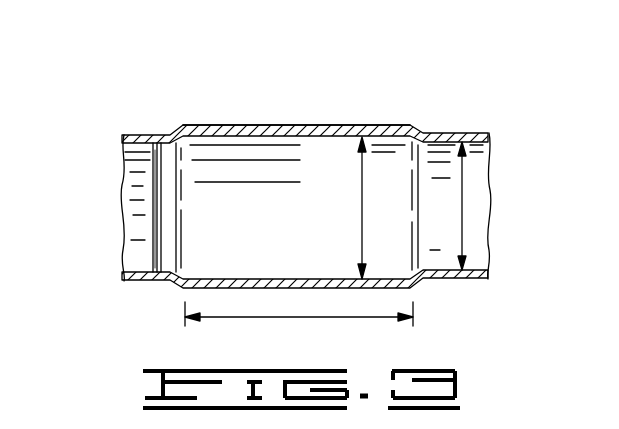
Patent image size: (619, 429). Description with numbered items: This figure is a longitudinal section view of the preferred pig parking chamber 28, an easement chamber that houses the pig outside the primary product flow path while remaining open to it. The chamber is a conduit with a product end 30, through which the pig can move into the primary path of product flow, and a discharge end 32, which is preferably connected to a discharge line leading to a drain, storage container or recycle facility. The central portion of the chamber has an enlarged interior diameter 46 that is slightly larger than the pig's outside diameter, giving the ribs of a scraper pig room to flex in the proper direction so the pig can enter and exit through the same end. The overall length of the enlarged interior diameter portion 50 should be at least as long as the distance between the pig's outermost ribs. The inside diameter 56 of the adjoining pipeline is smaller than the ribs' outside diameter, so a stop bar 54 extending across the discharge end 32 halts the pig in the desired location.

The pig parking chamber 28 is at (219, 56).
The product end 30 is at (396, 126).
The discharge end 32 is at (152, 134).
The interior diameter 46 is at (362, 234).
The overall length of the enlarged interior diameter portion 50 is at (325, 317).
The stop bar 54 is at (155, 212).
The inside diameter of the pipeline 56 is at (463, 200).